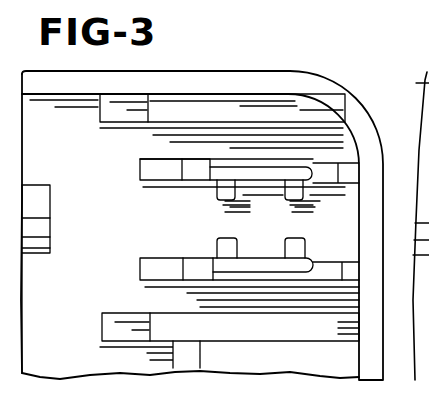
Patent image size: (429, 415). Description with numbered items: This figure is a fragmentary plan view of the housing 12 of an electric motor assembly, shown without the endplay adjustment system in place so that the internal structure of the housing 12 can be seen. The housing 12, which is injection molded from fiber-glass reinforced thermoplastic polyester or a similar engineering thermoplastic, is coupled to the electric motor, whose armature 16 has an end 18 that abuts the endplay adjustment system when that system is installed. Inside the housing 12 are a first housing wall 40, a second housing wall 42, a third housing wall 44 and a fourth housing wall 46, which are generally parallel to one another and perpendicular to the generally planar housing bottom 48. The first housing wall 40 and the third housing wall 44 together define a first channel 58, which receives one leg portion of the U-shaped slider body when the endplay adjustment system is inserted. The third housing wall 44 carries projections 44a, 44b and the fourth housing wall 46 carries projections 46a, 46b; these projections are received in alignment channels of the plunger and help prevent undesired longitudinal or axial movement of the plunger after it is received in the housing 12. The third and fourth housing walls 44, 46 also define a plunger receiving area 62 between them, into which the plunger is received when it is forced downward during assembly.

The housing 12 is at (214, 75).
The armature 16 is at (27, 257).
The end 18 is at (50, 245).
The first housing wall 40 is at (250, 106).
The second housing wall 42 is at (259, 332).
The third housing wall 44 is at (333, 167).
The projection 44a is at (225, 190).
The projection 44b is at (293, 187).
The fourth housing wall 46 is at (326, 258).
The projection 46a is at (226, 248).
The projection 46b is at (294, 248).
The housing bottom 48 is at (66, 137).
The first channel 58 is at (210, 142).
The plunger receiving area 62 is at (158, 222).